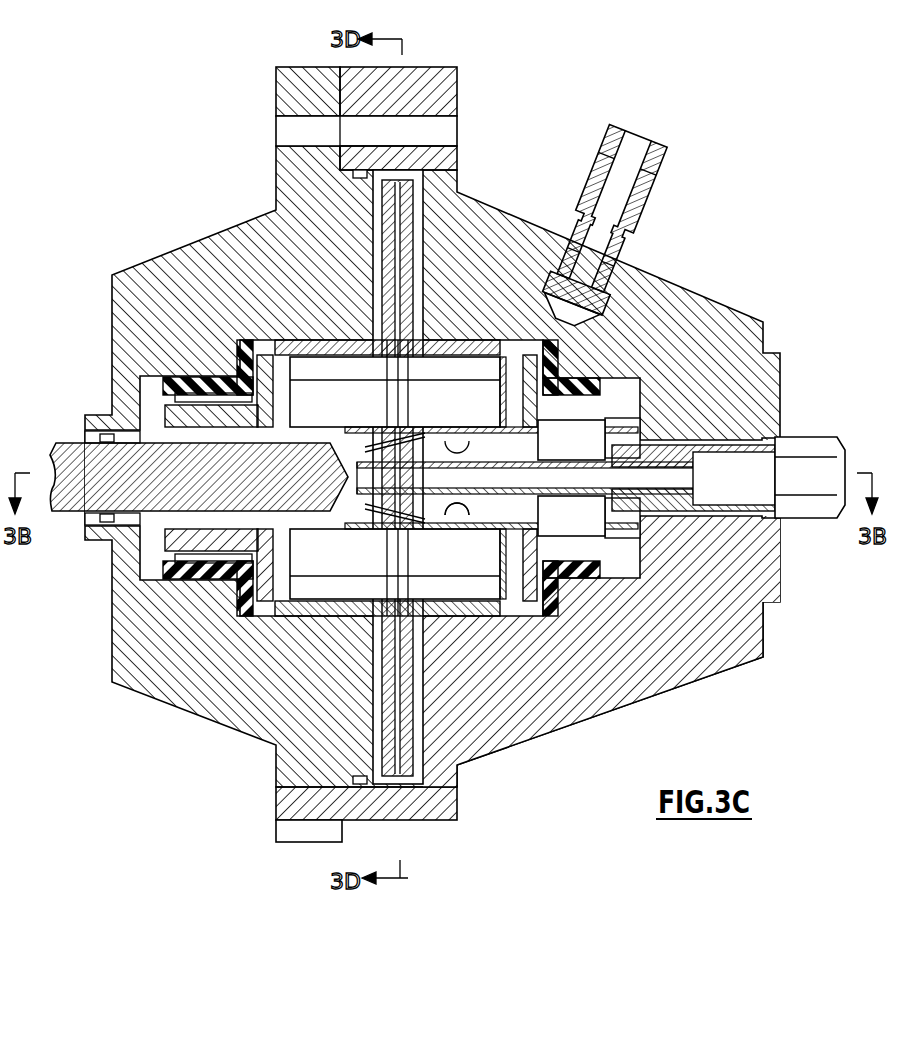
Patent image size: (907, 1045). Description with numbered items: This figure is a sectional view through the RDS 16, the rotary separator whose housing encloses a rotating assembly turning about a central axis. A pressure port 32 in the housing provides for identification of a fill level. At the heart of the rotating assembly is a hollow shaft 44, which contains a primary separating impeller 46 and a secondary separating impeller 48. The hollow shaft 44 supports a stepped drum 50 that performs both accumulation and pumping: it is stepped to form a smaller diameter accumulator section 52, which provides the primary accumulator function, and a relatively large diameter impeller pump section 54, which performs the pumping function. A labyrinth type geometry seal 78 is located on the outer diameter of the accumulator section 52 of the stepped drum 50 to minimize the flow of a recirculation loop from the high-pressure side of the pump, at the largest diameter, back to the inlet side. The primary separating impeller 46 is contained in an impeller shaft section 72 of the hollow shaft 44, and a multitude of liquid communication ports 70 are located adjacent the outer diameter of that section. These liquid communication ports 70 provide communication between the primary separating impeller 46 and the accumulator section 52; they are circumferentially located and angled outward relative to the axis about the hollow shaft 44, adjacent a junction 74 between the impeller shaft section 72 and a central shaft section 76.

The RDS 16 is at (765, 288).
The pressure port 32 is at (655, 176).
The hollow shaft 44 is at (282, 464).
The primary separating impeller 46 is at (558, 448).
The secondary separating impeller 48 is at (372, 447).
The stepped drum 50 is at (348, 338).
The accumulator section 52 is at (431, 411).
The impeller pump section 54 is at (410, 250).
The liquid communication ports 70 is at (563, 375).
The impeller shaft section 72 is at (621, 539).
The junction 74 is at (505, 538).
The central shaft section 76 is at (440, 524).
The labyrinth type geometry seal 78 is at (282, 345).